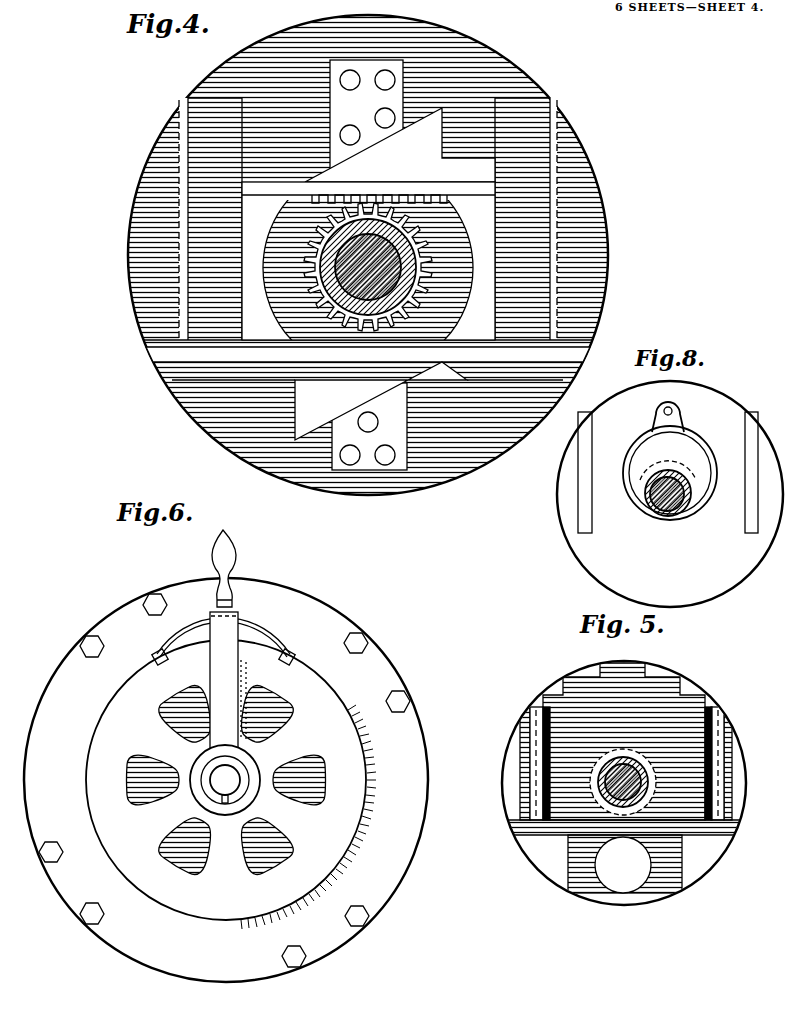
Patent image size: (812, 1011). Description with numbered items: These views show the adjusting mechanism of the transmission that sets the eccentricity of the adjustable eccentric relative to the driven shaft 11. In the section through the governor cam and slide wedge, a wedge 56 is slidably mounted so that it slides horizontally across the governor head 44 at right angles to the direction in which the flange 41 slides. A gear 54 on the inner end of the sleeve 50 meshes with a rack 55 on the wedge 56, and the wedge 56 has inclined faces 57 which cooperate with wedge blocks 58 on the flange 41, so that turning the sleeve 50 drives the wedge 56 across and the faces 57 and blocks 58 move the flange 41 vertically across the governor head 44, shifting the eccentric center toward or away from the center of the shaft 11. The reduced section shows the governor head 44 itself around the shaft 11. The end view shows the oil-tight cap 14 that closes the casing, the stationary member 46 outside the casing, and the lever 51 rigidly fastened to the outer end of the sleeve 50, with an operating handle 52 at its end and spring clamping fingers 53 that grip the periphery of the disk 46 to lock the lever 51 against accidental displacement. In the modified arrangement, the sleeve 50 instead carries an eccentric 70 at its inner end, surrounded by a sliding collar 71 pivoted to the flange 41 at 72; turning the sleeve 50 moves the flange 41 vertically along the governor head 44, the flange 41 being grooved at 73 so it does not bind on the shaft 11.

In FIG. 4, the shaft 11 is at (327, 300).
In FIG. 8, the shaft 11 is at (668, 512).
In FIG. 5, the shaft 11 is at (605, 805).
In FIG. 6, the shaft 11 is at (215, 772).
In FIG. 6, the oil-tight cap 14 is at (408, 767).
In FIG. 4, the flange 41 is at (604, 222).
In FIG. 8, the flange 41 is at (565, 498).
In FIG. 5, the governor head 44 is at (545, 702).
In FIG. 6, the stationary member 46 is at (356, 803).
In FIG. 4, the sleeve 50 is at (407, 280).
In FIG. 8, the sleeve 50 is at (685, 512).
In FIG. 5, the sleeve 50 is at (645, 800).
In FIG. 6, the sleeve 50 is at (206, 790).
In FIG. 6, the lever 51 is at (228, 680).
In FIG. 6, the operating handle 52 is at (236, 556).
In FIG. 6, the spring clamping fingers 53 is at (290, 652).
In FIG. 4, the gear 54 is at (413, 253).
In FIG. 4, the rack 55 is at (407, 197).
In FIG. 4, the wedge 56 is at (368, 261).
In FIG. 4, the inclined faces 57 is at (395, 274).
In FIG. 4, the wedge blocks 58 is at (368, 265).
In FIG. 8, the eccentric 70 is at (688, 448).
In FIG. 8, the sliding collar 71 is at (639, 448).
In FIG. 8, the pivot 72 is at (683, 404).
In FIG. 8, the groove 73 is at (685, 470).